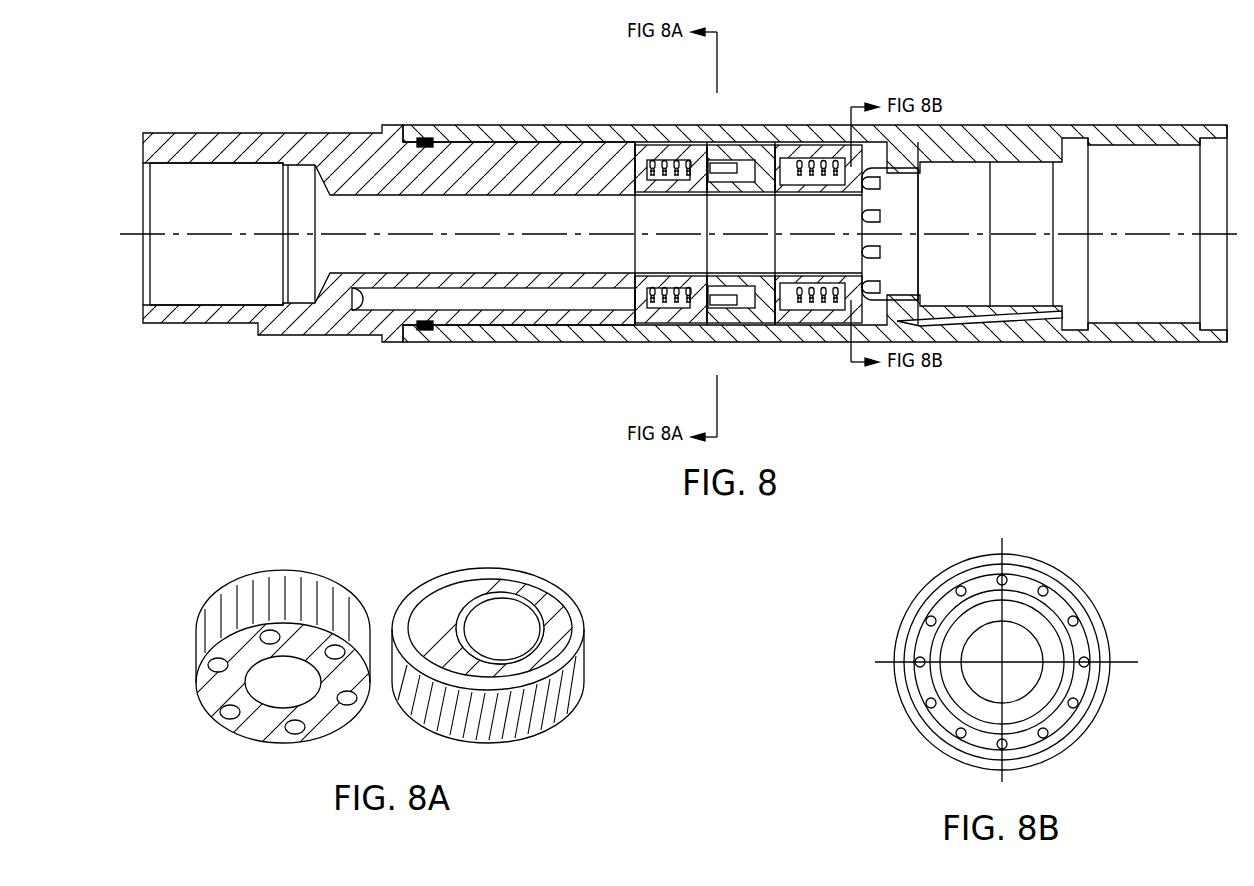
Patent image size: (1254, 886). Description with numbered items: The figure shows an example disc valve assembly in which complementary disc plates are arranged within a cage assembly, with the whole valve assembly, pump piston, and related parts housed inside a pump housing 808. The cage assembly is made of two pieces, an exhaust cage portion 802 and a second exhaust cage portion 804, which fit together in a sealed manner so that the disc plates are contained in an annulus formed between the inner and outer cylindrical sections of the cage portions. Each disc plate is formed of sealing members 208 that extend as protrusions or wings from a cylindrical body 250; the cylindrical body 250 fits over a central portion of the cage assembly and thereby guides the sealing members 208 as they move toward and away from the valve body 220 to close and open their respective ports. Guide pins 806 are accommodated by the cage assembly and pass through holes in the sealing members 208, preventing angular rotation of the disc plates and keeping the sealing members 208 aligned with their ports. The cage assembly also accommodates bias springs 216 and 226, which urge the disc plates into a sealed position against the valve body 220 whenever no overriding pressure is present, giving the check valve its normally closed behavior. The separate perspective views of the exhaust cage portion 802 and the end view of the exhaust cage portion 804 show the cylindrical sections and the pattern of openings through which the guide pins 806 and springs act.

In FIG. 8, the pump housing 808 is at (558, 125).
In FIG. 8, the exhaust cage portion 802 is at (652, 130).
In FIG. 8A, the exhaust cage portion 802 is at (270, 500).
In FIG. 8, the exhaust cage portion 804 is at (912, 192).
In FIG. 8B, the exhaust cage portion 804 is at (1120, 546).
In FIG. 8, the sealing members 208 is at (698, 142).
In FIG. 8, the guide pins 806 is at (726, 145).
In FIG. 8, the valve body 220 is at (760, 145).
In FIG. 8, the cylindrical body 250 is at (790, 145).
In FIG. 8, the bias spring 226 is at (640, 320).
In FIG. 8, the bias spring 216 is at (813, 305).